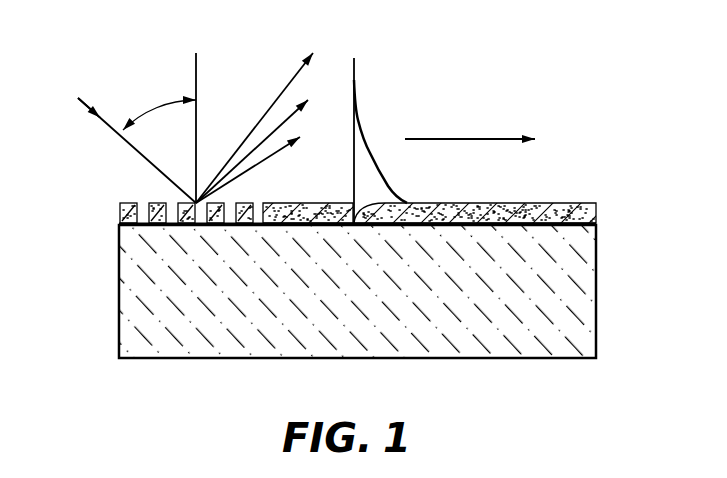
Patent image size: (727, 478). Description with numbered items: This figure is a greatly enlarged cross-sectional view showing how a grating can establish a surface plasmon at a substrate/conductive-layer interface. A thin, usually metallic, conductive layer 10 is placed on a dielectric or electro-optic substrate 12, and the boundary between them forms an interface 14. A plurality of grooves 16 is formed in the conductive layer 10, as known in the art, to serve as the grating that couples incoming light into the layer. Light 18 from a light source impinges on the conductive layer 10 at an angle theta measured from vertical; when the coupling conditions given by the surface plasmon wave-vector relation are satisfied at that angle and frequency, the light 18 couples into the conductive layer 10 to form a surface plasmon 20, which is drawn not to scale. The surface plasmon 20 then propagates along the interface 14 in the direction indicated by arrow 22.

The conductive layer 10 is at (563, 203).
The electro-optic substrate 12 is at (520, 298).
The interface 14 is at (577, 227).
The grooves 16 is at (147, 202).
The light 18 is at (116, 126).
The surface plasmon 20 is at (355, 82).
The arrow 22 is at (448, 139).